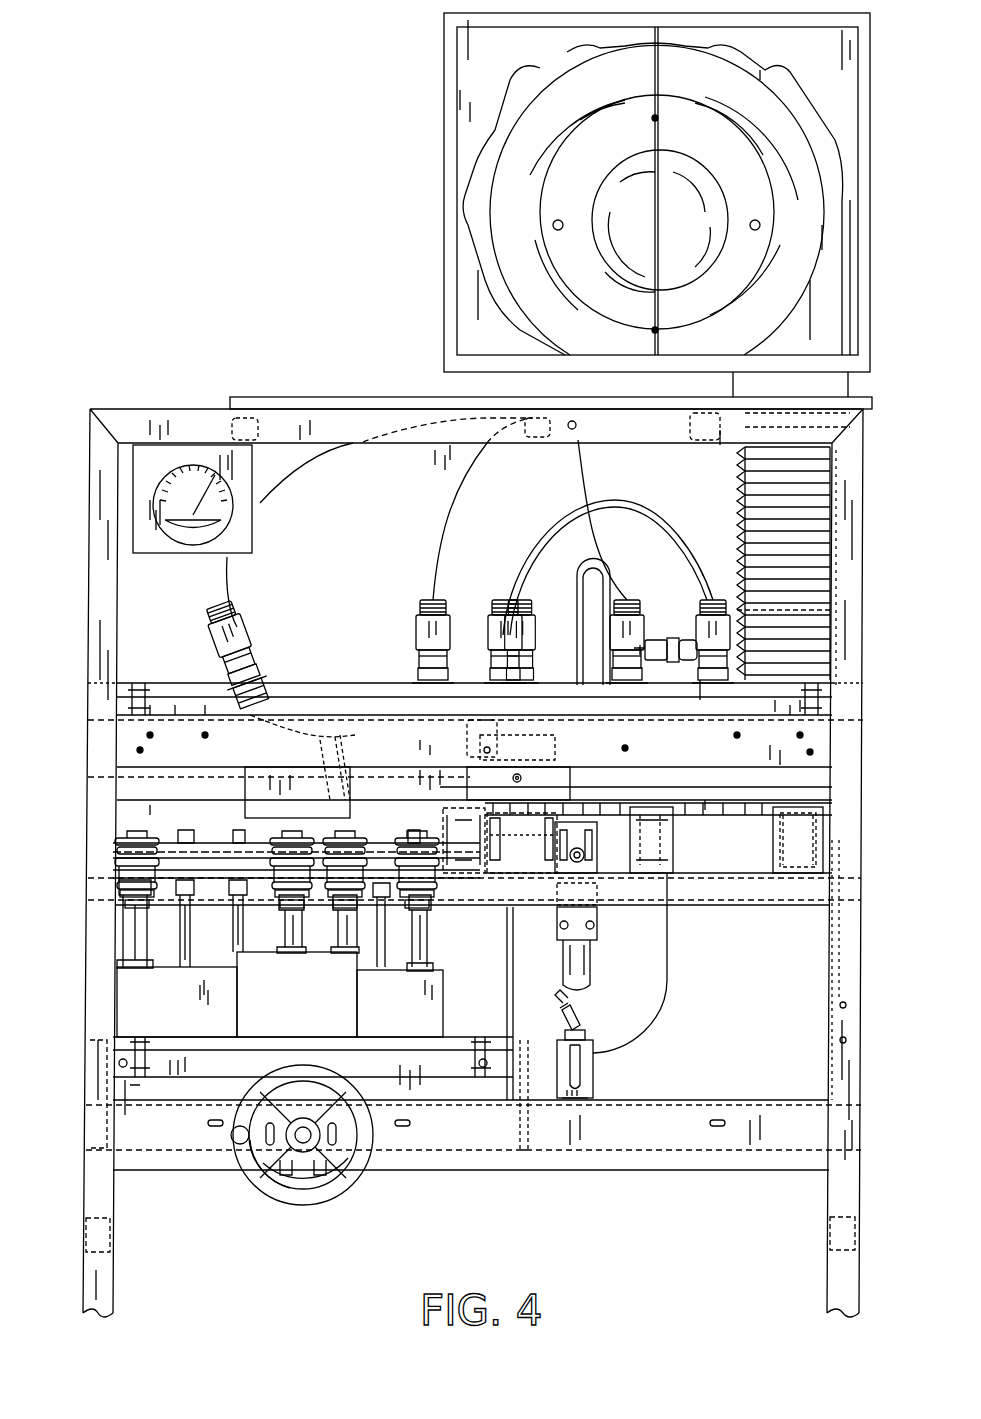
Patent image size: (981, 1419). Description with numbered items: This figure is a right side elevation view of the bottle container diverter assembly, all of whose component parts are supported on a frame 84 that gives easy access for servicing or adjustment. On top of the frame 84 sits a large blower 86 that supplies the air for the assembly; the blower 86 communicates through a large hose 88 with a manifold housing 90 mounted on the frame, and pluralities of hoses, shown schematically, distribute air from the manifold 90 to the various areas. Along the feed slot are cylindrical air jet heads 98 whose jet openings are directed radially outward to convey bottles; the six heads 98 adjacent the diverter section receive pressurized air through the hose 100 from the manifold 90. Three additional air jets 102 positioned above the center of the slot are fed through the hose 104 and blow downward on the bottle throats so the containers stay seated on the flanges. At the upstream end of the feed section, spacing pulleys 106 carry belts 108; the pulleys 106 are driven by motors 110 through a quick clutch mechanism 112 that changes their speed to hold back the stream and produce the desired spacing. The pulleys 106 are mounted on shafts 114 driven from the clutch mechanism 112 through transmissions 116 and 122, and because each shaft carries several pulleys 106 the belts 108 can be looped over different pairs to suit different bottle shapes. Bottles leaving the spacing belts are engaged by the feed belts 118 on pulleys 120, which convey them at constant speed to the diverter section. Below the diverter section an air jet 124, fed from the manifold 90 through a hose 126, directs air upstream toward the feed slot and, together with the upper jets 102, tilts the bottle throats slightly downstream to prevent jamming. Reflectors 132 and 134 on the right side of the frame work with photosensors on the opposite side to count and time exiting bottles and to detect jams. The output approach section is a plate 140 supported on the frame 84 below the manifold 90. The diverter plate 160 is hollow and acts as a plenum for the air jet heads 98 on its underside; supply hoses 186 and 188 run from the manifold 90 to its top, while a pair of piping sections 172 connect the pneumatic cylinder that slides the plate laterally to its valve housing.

The frame 84 is at (285, 418).
The blower 86 is at (495, 195).
The hose 88 is at (827, 517).
The manifold housing 90 is at (773, 667).
The air jet heads 98 is at (382, 883).
The hose 100 is at (447, 512).
The air jets 102 is at (375, 790).
The hose 104 is at (300, 463).
The spacing pulleys 106 is at (148, 836).
The belts 108 is at (113, 850).
The motors 110 is at (250, 805).
The clutch mechanism 112 is at (309, 1013).
The shafts 114 is at (290, 908).
The transmission 116 is at (190, 1020).
The feed belts 118 is at (293, 950).
The feed pulleys 120 is at (490, 837).
The transmission 122 is at (409, 1013).
The air jet 124 is at (587, 1013).
The hose 126 is at (653, 1023).
The reflector 132 is at (573, 947).
The reflector 134 is at (583, 927).
The plate 140 is at (790, 827).
The diverter plate 160 is at (487, 748).
The piping sections 172 is at (590, 477).
The supply hose 186 is at (518, 568).
The supply hose 188 is at (537, 543).